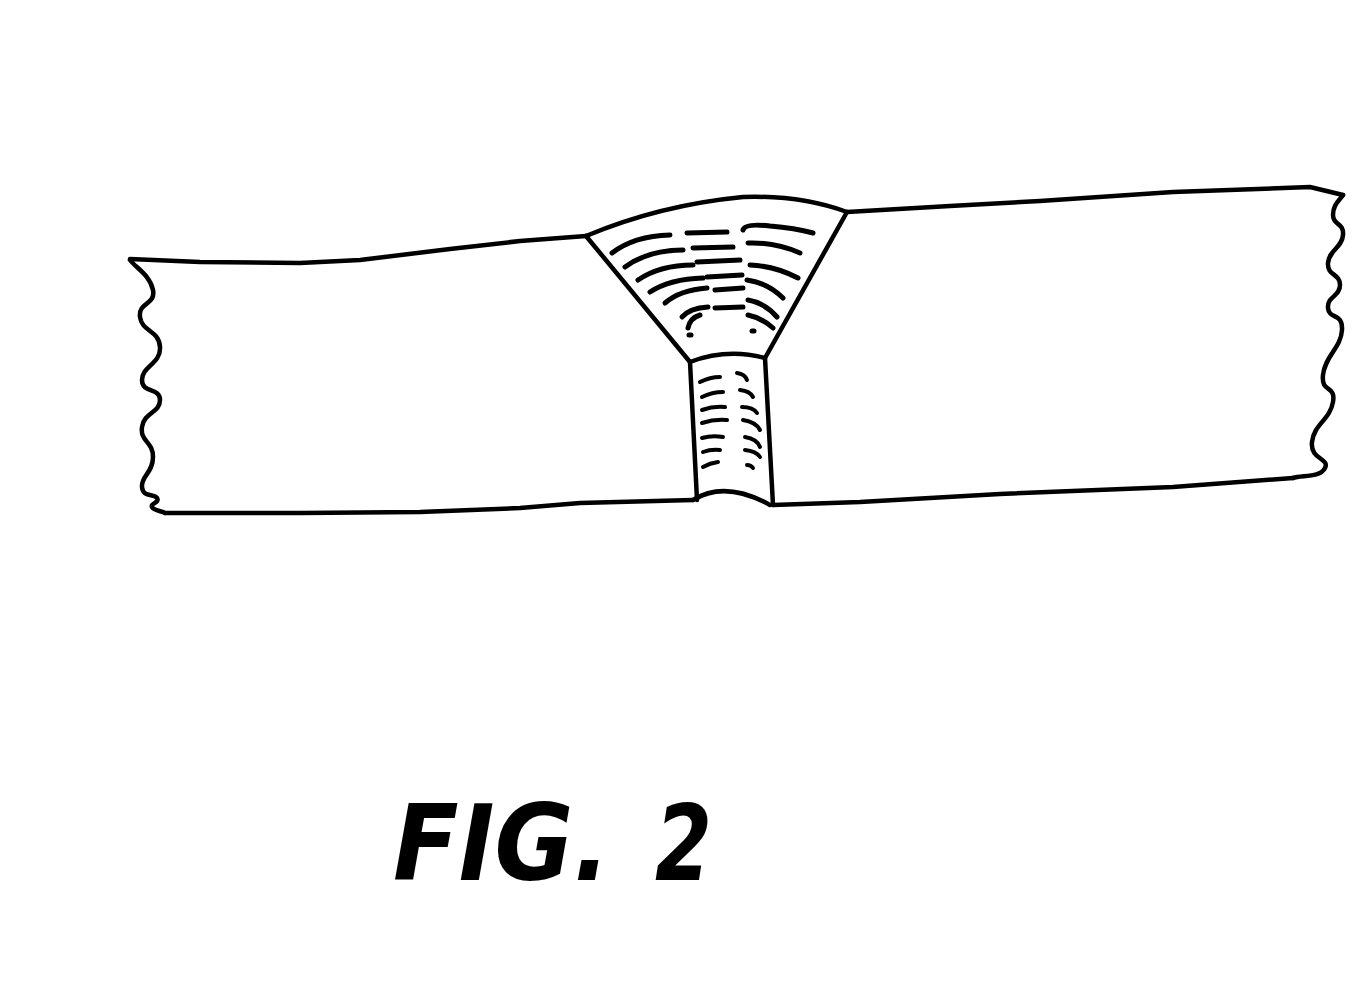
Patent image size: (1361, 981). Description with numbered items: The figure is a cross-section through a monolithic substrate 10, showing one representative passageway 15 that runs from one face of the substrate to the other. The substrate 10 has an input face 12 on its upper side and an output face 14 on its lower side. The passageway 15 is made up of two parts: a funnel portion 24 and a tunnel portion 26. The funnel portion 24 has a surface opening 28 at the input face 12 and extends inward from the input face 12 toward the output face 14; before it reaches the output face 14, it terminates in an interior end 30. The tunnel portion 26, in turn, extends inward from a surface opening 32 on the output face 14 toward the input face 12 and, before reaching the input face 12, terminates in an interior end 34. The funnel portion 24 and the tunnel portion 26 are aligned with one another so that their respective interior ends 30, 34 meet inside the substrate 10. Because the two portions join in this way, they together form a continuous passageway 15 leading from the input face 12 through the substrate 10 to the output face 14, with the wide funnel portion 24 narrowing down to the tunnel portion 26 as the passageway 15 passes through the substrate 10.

The substrate 10 is at (736, 364).
The input face 12 is at (1032, 200).
The output face 14 is at (590, 502).
The passageway 15 is at (693, 304).
The funnel portion 24 is at (607, 298).
The tunnel portion 26 is at (783, 413).
The surface opening 28 is at (628, 203).
The interior end 30 is at (782, 347).
The surface opening 32 is at (750, 520).
The interior end 34 is at (678, 377).